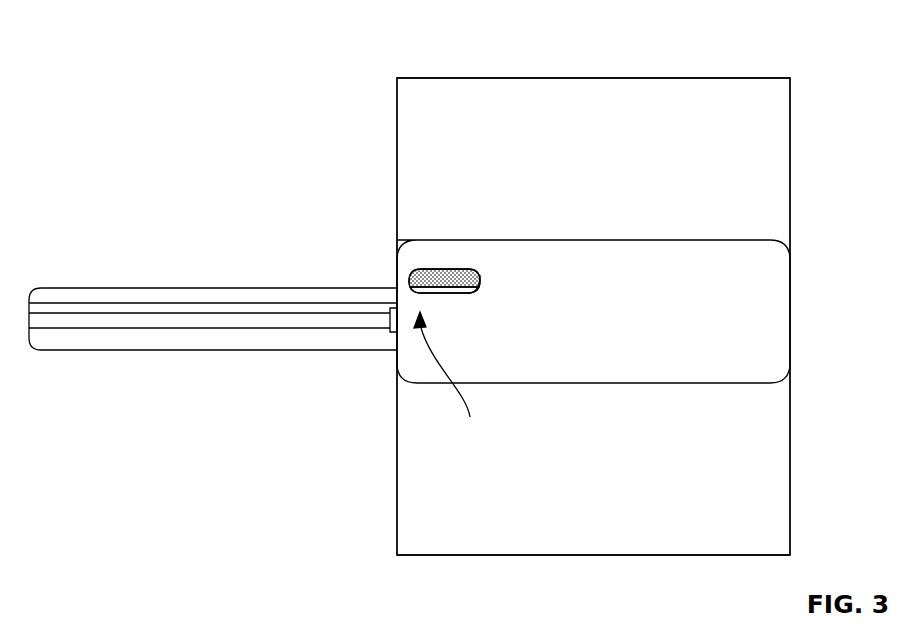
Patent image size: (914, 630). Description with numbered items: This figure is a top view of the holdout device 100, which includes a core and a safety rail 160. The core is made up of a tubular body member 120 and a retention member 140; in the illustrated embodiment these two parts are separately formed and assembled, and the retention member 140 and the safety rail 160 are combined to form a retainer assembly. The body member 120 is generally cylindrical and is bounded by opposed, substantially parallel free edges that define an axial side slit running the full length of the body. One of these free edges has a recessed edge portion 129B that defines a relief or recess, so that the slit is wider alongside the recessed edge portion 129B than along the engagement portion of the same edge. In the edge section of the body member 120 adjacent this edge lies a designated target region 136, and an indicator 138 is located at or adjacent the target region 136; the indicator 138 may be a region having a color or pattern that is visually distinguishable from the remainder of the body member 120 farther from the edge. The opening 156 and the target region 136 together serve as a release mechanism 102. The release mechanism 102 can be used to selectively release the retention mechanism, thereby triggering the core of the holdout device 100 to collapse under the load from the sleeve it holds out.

The holdout device 100 is at (165, 70).
The tubular body member 120 is at (713, 95).
The retention member 140 is at (763, 292).
The safety rail 160 is at (195, 340).
The target region 136 is at (424, 272).
The opening 156 is at (460, 270).
The indicator 138 is at (477, 278).
The recessed edge portion 129B is at (455, 293).
The release mechanism 102 is at (452, 378).